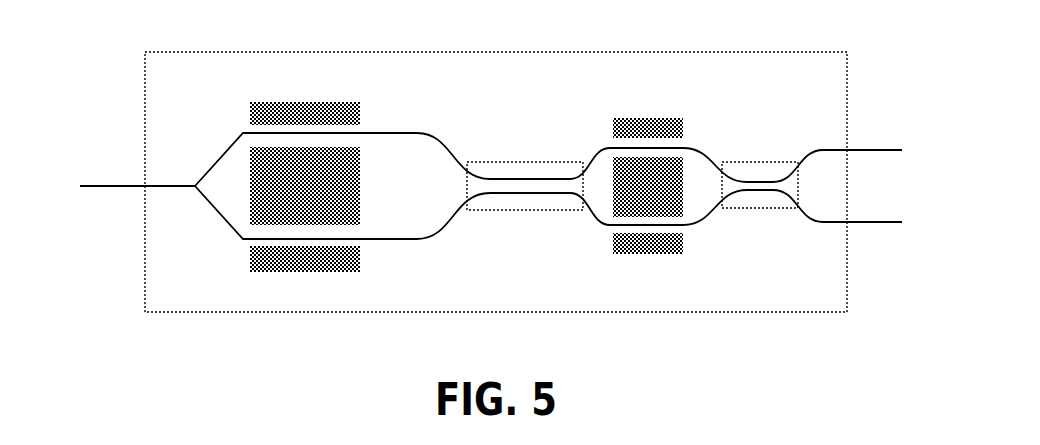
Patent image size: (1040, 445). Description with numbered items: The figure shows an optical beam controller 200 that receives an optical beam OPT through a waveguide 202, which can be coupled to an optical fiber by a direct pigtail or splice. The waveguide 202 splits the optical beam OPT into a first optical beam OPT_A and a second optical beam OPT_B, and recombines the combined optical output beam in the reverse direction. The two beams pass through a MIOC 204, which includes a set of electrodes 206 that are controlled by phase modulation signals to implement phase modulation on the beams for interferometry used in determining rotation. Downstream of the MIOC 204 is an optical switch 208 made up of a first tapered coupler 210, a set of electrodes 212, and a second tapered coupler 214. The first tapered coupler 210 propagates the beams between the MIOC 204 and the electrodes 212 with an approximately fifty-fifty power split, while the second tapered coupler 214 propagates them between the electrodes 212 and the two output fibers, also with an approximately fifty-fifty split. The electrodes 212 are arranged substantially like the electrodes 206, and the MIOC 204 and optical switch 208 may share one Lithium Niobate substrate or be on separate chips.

The optical beam controller 200 is at (177, 52).
The waveguide 202 is at (162, 185).
The MIOC 204 is at (312, 85).
The electrodes 206 is at (260, 100).
The optical switch 208 is at (648, 80).
The first tapered coupler 210 is at (523, 162).
The electrodes 212 is at (634, 118).
The second tapered coupler 214 is at (748, 162).